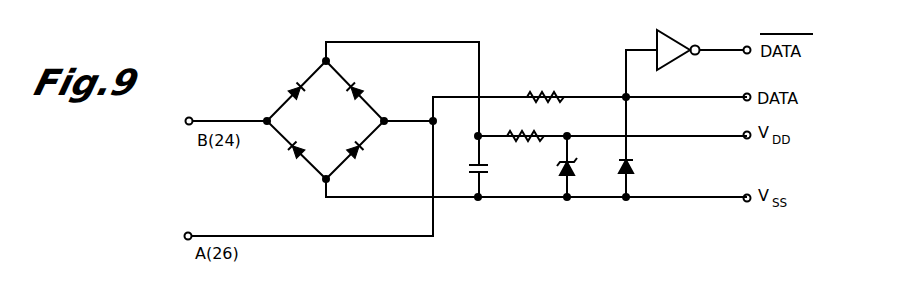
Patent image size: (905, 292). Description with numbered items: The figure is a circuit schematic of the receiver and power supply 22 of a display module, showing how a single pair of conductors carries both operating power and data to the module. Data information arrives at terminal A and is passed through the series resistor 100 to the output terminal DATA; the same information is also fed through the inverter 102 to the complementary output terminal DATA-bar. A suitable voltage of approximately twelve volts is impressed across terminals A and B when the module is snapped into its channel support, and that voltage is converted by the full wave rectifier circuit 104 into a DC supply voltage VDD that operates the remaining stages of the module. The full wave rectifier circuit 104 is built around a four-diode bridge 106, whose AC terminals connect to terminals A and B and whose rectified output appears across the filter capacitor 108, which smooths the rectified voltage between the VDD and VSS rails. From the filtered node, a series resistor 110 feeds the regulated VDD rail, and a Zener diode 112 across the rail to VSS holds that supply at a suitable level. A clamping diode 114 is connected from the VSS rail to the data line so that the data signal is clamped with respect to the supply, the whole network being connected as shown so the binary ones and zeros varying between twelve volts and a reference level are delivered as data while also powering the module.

The receiver and power supply 22 is at (550, 26).
The series resistor 100 is at (561, 88).
The inverter 102 is at (677, 47).
The full wave rectifier circuit 104 is at (404, 111).
The four-diode bridge 106 is at (338, 128).
The filter capacitor 108 is at (489, 170).
The series resistor 110 is at (542, 136).
The Zener diode 112 is at (582, 166).
The clamping diode 114 is at (633, 170).